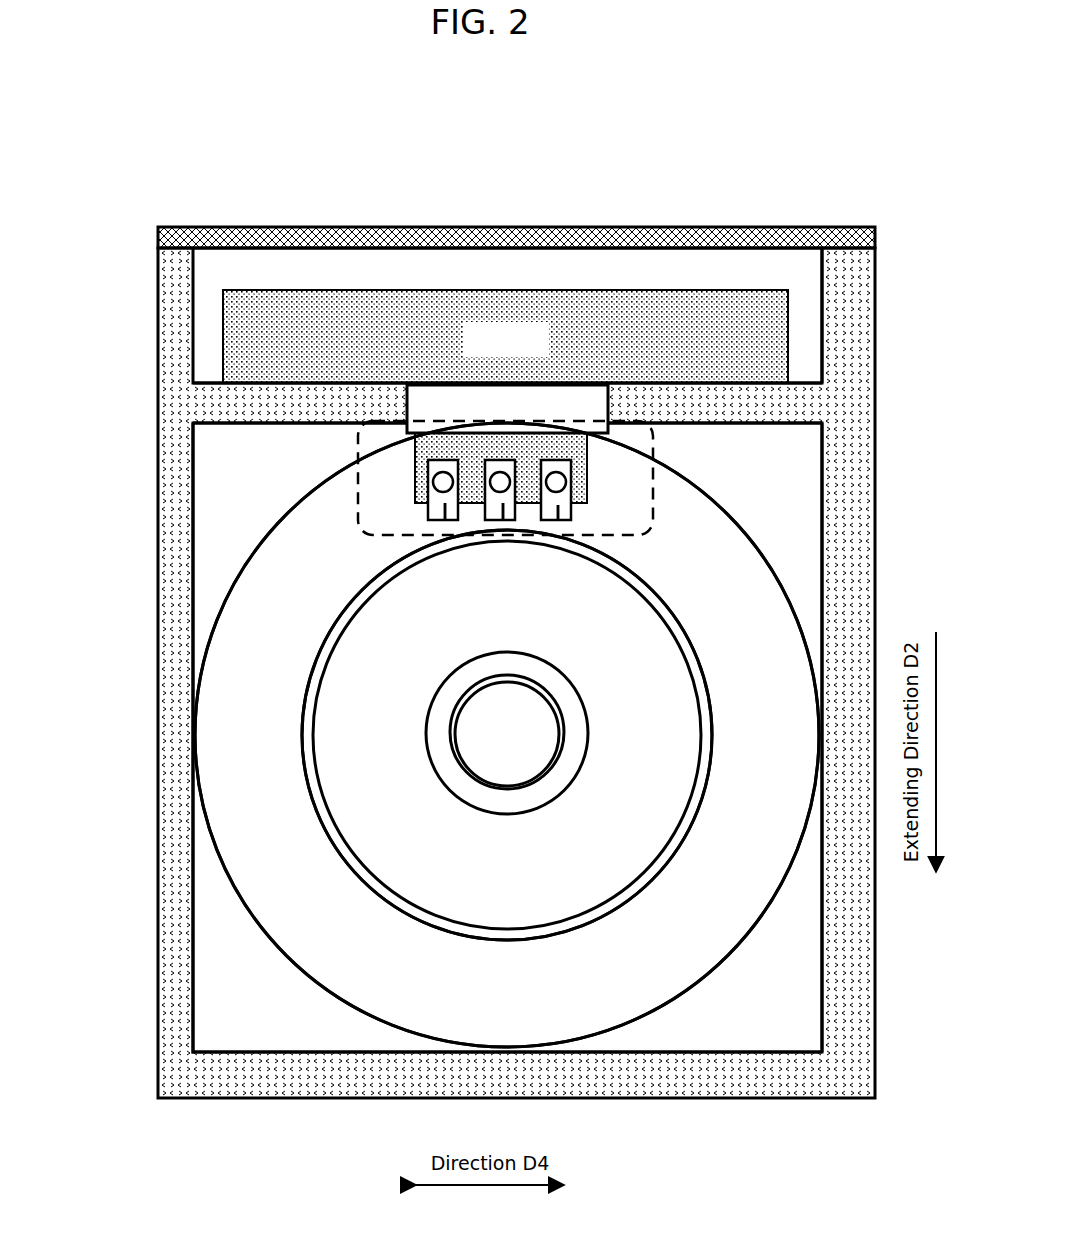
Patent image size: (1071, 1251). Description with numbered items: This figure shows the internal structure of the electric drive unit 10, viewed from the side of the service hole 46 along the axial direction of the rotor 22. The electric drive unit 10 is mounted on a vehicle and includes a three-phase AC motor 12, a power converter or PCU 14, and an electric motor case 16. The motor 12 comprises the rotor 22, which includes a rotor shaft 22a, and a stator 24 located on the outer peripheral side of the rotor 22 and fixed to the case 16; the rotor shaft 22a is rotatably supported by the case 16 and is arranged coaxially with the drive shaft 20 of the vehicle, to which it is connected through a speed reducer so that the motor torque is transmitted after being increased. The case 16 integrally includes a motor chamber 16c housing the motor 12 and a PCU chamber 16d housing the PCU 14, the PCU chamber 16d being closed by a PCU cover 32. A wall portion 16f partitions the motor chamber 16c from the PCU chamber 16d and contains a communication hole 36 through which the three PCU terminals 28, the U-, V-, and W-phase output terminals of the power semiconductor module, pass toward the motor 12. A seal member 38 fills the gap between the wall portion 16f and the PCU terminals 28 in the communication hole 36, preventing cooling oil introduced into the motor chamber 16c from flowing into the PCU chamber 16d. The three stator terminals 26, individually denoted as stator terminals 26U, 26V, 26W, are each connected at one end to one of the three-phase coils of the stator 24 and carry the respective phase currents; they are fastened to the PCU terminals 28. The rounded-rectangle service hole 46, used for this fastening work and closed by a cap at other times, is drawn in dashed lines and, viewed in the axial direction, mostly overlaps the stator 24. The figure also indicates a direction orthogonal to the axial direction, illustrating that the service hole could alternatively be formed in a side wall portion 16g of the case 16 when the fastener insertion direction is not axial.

The electric drive unit 10 is at (843, 142).
The three-phase AC motor 12 is at (719, 986).
The power converter (PCU) 14 is at (507, 283).
The electric motor case 16 is at (882, 346).
The motor chamber 16c is at (793, 502).
The PCU chamber 16d is at (803, 297).
The wall portion (partition wall) 16f is at (688, 405).
The side wall portion 16g is at (845, 616).
The drive shaft 20 is at (505, 735).
The rotor 22 is at (621, 854).
The rotor shaft 22a is at (398, 827).
The stator 24 is at (753, 876).
The stator terminals 26 is at (82, 512).
The U-phase stator terminal 26U is at (445, 503).
The V-phase stator terminal 26V is at (503, 503).
The W-phase stator terminal 26W is at (558, 505).
The PCU terminals 28 is at (575, 470).
The PCU cover 32 is at (322, 240).
The communication hole 36 is at (597, 434).
The seal member 38 is at (578, 400).
The service hole 46 is at (655, 502).